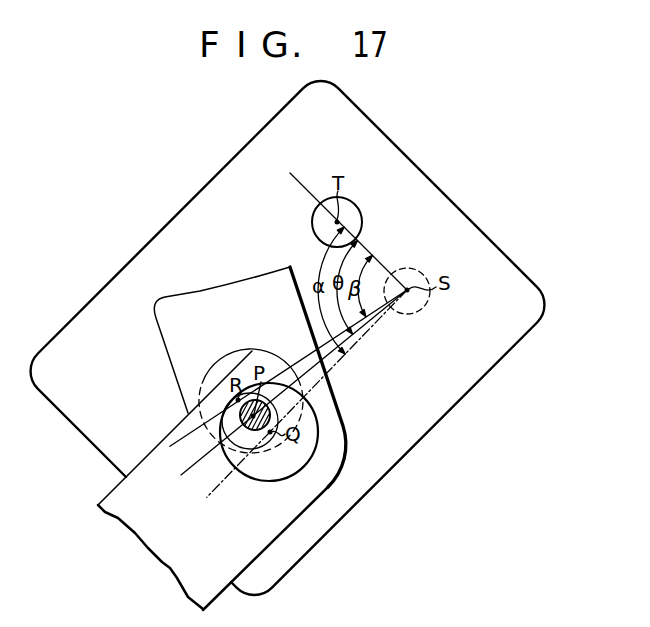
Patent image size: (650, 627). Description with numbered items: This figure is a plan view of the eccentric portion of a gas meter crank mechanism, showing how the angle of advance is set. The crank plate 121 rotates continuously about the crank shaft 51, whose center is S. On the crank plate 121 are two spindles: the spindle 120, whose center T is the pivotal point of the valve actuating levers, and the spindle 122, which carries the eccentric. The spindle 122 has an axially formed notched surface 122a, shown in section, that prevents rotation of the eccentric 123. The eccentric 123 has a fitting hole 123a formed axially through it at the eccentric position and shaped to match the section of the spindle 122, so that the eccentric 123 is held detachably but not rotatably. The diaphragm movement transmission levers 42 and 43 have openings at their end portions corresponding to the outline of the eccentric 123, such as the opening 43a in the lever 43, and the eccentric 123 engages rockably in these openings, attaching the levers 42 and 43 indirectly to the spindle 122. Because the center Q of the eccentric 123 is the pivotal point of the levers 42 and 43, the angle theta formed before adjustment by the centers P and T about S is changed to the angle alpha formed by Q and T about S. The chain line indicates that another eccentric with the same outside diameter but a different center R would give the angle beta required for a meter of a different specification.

The crank plate 121 is at (177, 214).
The spindle 120 is at (355, 207).
The crank shaft 51 is at (410, 268).
The diaphragm movement transmission lever 42 is at (163, 336).
The diaphragm movement transmission lever 43 is at (171, 562).
The opening 43a is at (248, 477).
The spindle 122 is at (212, 438).
The notched surface 122a is at (248, 447).
The eccentric 123 is at (210, 368).
The fitting hole 123a is at (283, 396).